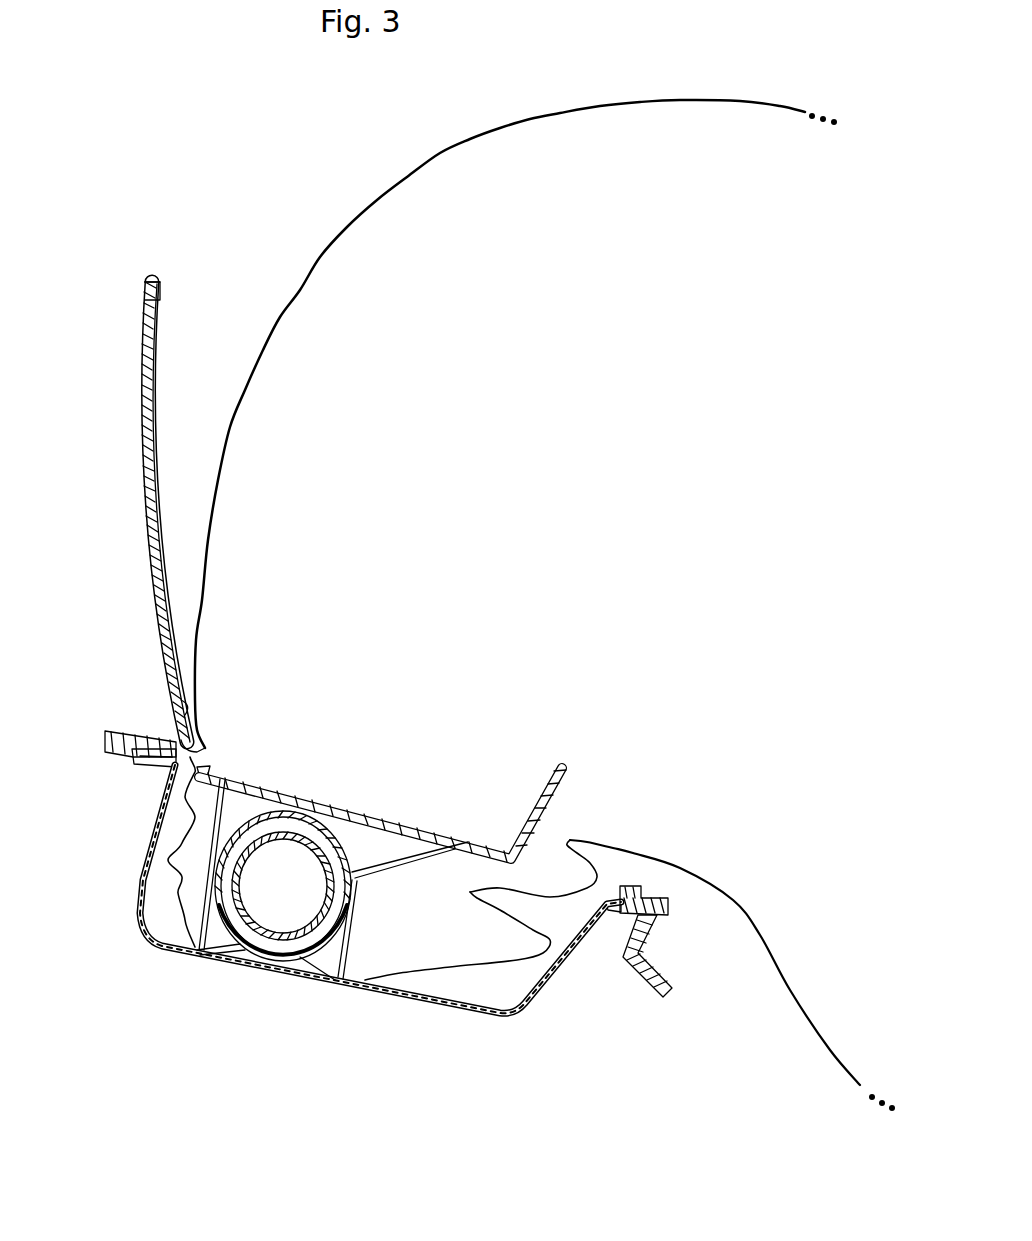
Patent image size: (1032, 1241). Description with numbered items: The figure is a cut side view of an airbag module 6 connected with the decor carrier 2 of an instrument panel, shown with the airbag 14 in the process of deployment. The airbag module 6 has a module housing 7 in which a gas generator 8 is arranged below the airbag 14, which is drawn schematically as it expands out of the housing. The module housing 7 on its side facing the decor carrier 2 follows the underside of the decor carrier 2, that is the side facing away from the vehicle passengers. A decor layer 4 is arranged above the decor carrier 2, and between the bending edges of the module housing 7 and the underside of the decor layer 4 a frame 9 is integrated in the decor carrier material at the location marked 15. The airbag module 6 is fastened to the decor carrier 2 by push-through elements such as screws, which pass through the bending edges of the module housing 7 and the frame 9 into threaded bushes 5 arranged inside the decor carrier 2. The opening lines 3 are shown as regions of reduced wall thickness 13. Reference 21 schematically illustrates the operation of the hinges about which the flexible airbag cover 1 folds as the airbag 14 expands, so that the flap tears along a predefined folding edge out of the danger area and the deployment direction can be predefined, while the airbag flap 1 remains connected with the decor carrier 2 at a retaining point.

The flexible airbag cover 1 is at (182, 704).
The decor carrier 2 is at (113, 767).
The opening lines 3 is at (145, 284).
The decor layer 4 is at (150, 535).
The threaded bushes 5 is at (646, 892).
The airbag module 6 is at (501, 982).
The module housing 7 is at (352, 985).
The gas generator 8 is at (255, 940).
The frame 9 is at (663, 918).
The reduced wall thickness 13 is at (205, 748).
The airbag 14 is at (506, 160).
The integration point of the frame 15 is at (142, 767).
The hinge operation 21 is at (207, 373).